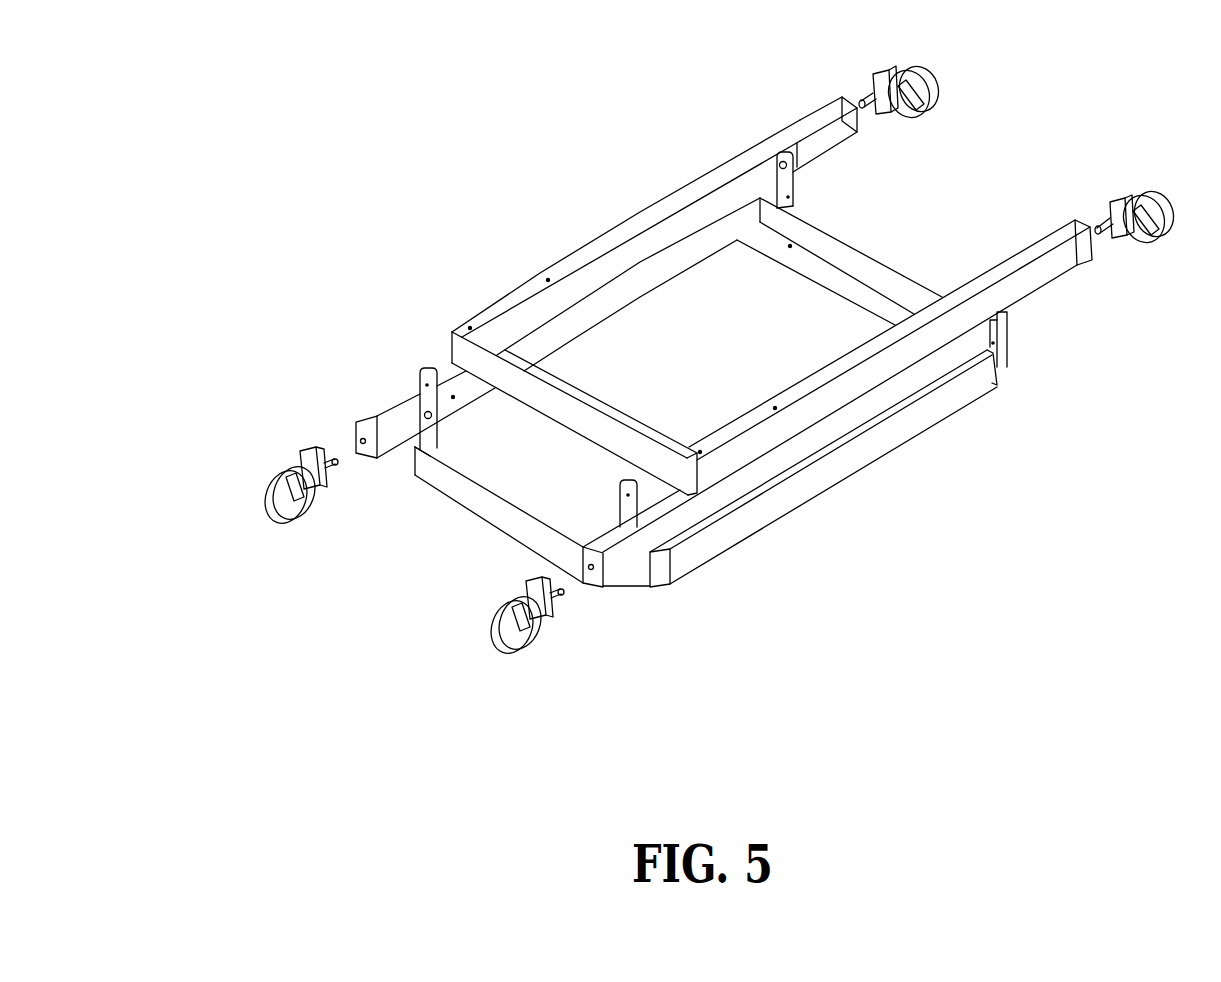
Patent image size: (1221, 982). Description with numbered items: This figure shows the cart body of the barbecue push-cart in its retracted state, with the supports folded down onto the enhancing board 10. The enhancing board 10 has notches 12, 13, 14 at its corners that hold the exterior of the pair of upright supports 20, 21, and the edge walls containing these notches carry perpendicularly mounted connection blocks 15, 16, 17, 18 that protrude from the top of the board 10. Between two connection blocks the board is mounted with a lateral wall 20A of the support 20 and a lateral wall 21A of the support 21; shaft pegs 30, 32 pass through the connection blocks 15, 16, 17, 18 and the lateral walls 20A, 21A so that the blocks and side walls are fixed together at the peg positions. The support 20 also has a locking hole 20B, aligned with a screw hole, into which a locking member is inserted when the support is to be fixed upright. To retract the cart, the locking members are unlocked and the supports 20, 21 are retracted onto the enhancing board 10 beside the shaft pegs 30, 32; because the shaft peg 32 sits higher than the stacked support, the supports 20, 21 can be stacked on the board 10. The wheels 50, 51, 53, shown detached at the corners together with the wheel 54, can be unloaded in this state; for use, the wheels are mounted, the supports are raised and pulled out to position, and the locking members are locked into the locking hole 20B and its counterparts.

The enhancing board 10 is at (510, 477).
The notch 12 is at (998, 367).
The notch 13 is at (647, 582).
The notch 14 is at (407, 458).
The connection block 15 is at (787, 185).
The connection block 16 is at (1000, 317).
The connection block 17 is at (397, 400).
The connection block 18 is at (632, 505).
The upright support 20 is at (573, 408).
The lateral wall 20A is at (810, 117).
The locking hole 20B is at (808, 150).
The upright support 21 is at (865, 270).
The lateral wall 21A is at (442, 397).
The shaft peg 30 is at (790, 165).
The shaft peg 32 is at (432, 415).
The wheel 50 is at (930, 88).
The wheel 51 is at (1140, 242).
The wheel 53 is at (515, 615).
The caster 54 is at (270, 497).